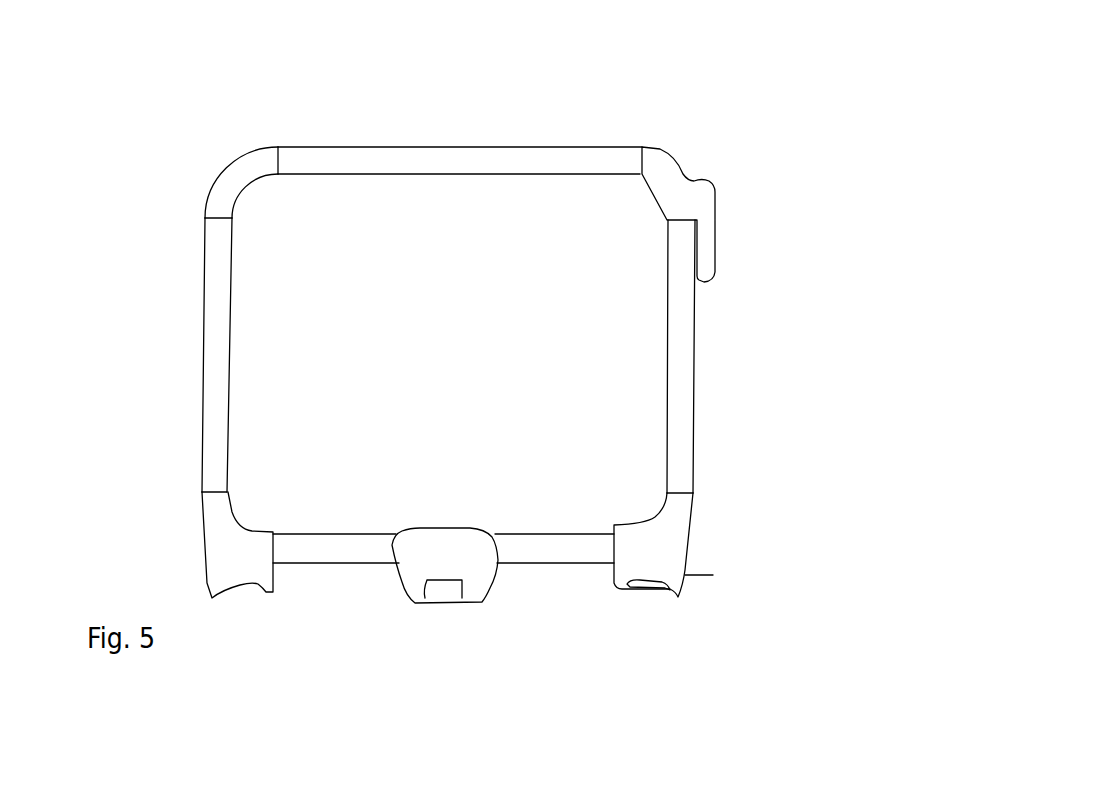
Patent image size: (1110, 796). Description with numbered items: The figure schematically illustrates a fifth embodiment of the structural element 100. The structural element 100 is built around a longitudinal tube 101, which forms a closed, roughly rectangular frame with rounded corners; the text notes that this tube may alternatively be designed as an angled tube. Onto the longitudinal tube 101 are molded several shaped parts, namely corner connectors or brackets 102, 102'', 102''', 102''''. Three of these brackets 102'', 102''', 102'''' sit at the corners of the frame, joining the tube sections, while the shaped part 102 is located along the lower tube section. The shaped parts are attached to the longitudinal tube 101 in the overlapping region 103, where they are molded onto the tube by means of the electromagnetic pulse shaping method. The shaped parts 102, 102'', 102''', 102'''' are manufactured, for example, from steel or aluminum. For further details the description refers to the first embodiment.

The structural element 100 is at (688, 108).
The longitudinal tube 101 is at (327, 553).
The shaped part 102 is at (449, 663).
The shaped part 102'' is at (771, 210).
The shaped part 102''' is at (737, 535).
The shaped part 102'''' is at (158, 545).
The overlapping region 103 is at (395, 555).